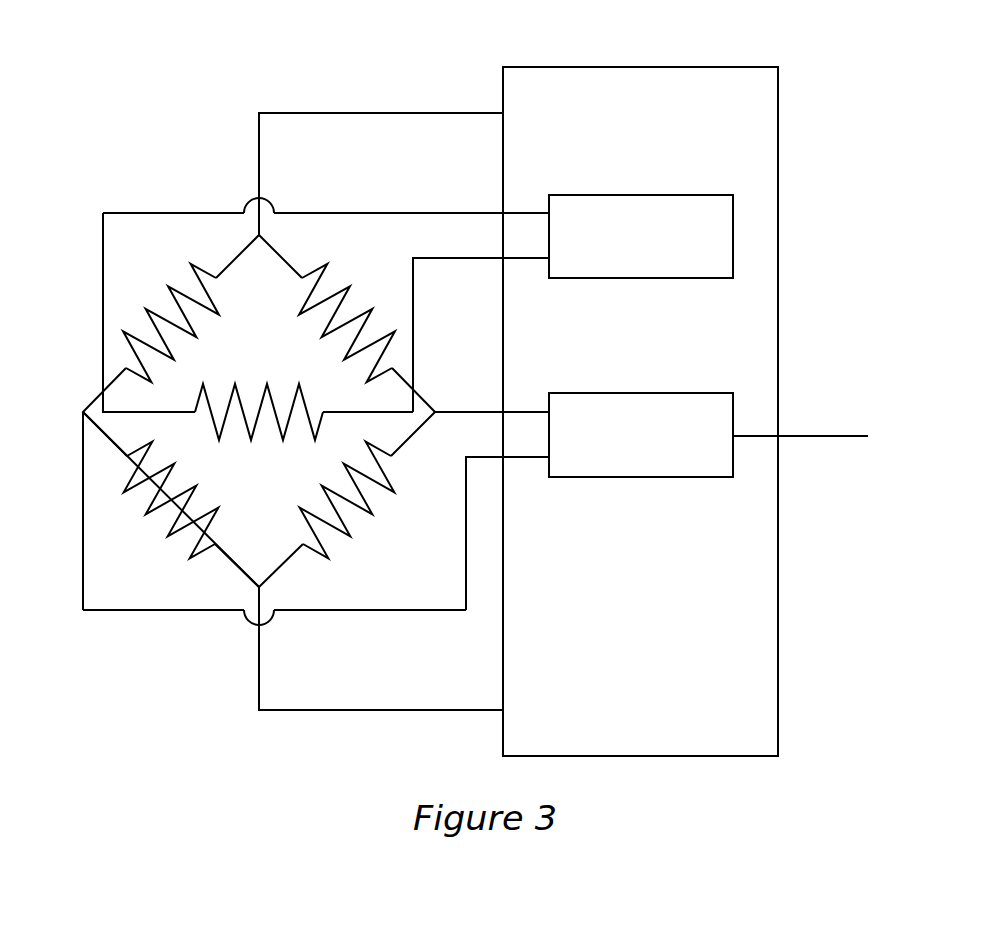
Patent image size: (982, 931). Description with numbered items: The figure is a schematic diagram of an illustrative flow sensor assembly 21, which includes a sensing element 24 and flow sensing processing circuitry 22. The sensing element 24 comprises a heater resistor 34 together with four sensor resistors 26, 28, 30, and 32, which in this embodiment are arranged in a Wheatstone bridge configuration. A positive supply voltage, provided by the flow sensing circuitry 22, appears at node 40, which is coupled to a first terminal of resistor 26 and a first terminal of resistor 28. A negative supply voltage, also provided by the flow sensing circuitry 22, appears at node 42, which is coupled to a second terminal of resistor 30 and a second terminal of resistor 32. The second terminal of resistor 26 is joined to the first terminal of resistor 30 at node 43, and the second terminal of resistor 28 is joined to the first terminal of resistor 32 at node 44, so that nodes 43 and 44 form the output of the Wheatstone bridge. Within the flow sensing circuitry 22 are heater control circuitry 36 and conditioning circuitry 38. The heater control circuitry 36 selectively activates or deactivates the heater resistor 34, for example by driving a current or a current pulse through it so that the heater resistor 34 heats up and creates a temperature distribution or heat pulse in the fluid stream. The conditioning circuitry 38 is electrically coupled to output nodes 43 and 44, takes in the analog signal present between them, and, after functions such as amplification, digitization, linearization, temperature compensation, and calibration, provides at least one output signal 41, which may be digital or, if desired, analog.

The flow sensor assembly 21 is at (163, 97).
The flow sensing processing circuitry 22 is at (778, 103).
The sensing element 24 is at (129, 243).
The sensor resistor 26 is at (198, 283).
The sensor resistor 28 is at (336, 288).
The sensor resistor 30 is at (171, 525).
The sensor resistor 32 is at (337, 537).
The heater resistor 34 is at (222, 436).
The heater control circuitry 36 is at (640, 195).
The conditioning circuitry 38 is at (640, 393).
The node 40 is at (380, 112).
The output signal 41 is at (871, 391).
The node 42 is at (382, 713).
The node 43 is at (140, 612).
The node 44 is at (455, 410).